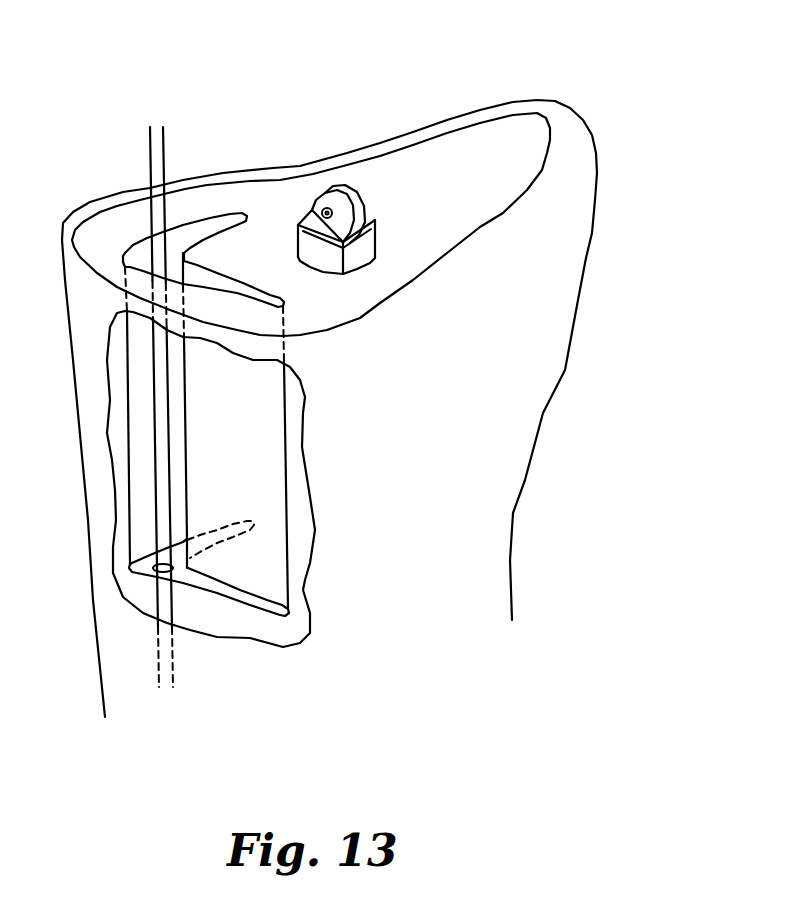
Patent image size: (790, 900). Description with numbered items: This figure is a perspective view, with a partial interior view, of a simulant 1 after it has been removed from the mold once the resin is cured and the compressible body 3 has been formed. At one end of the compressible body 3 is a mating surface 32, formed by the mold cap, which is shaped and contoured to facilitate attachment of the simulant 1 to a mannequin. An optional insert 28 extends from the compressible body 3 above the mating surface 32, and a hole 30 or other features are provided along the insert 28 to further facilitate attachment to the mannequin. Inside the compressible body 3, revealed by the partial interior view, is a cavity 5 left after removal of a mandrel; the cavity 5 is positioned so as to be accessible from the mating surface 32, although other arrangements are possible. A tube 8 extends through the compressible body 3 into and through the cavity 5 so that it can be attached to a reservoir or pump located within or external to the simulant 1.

The simulant 1 is at (338, 362).
The compressible body 3 is at (394, 500).
The cavity 5 is at (167, 430).
The tube 8 is at (122, 398).
The insert 28 is at (364, 166).
The hole 30 is at (305, 178).
The mating surface 32 is at (364, 224).